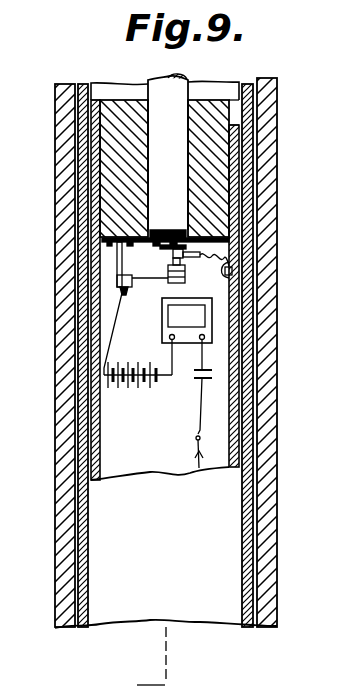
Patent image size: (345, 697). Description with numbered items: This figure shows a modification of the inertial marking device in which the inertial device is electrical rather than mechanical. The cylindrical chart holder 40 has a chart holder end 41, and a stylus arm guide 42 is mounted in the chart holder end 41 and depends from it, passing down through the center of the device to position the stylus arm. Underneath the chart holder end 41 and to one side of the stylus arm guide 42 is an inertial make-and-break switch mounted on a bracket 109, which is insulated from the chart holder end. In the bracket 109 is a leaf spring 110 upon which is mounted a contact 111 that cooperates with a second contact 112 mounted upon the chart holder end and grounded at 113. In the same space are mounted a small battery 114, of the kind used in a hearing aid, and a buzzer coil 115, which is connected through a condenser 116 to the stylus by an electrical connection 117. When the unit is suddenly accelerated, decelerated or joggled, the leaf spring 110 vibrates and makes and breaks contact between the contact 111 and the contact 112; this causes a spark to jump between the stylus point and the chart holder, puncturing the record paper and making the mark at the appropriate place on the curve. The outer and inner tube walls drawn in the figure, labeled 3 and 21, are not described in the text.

The outer tube 3 is at (62, 396).
The inner tube 21 is at (82, 436).
The chart holder 40 is at (217, 100).
The chart holder end 41 is at (120, 127).
The stylus arm guide 42 is at (148, 77).
The bracket 109 is at (117, 261).
The leaf spring 110 is at (150, 279).
The contact 111 is at (168, 267).
The contact 112 is at (186, 262).
The ground 113 is at (232, 268).
The battery 114 is at (128, 388).
The buzzer coil 115 is at (183, 345).
The condenser 116 is at (196, 400).
The electrical connection 117 is at (197, 470).